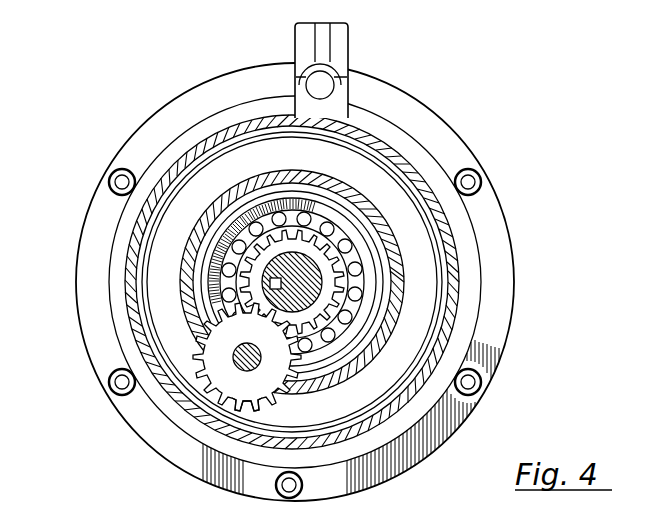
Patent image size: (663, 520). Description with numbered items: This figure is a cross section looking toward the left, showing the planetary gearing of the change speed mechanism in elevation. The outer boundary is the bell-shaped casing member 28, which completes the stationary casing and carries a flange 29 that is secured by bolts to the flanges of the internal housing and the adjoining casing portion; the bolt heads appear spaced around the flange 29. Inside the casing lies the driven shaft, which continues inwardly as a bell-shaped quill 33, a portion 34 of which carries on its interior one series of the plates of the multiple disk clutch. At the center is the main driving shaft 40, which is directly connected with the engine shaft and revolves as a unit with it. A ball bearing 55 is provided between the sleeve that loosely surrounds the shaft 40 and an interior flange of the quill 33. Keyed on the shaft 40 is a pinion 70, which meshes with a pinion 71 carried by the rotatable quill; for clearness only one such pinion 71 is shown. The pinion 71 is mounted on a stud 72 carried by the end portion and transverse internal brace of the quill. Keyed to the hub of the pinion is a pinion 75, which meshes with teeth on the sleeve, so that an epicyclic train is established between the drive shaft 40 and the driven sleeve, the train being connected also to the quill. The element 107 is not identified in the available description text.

The casing member 28 is at (230, 425).
The flange 29 is at (477, 206).
The bell-shaped quill 33 is at (385, 238).
The portion of the quill 34 is at (152, 313).
The main driving shaft 40 is at (325, 285).
The ball bearing 55 is at (193, 288).
The pinion 70 is at (340, 262).
The pinion 71 is at (240, 366).
The stud 72 is at (240, 368).
The pinion 75 is at (272, 410).
The pin 107 is at (333, 45).